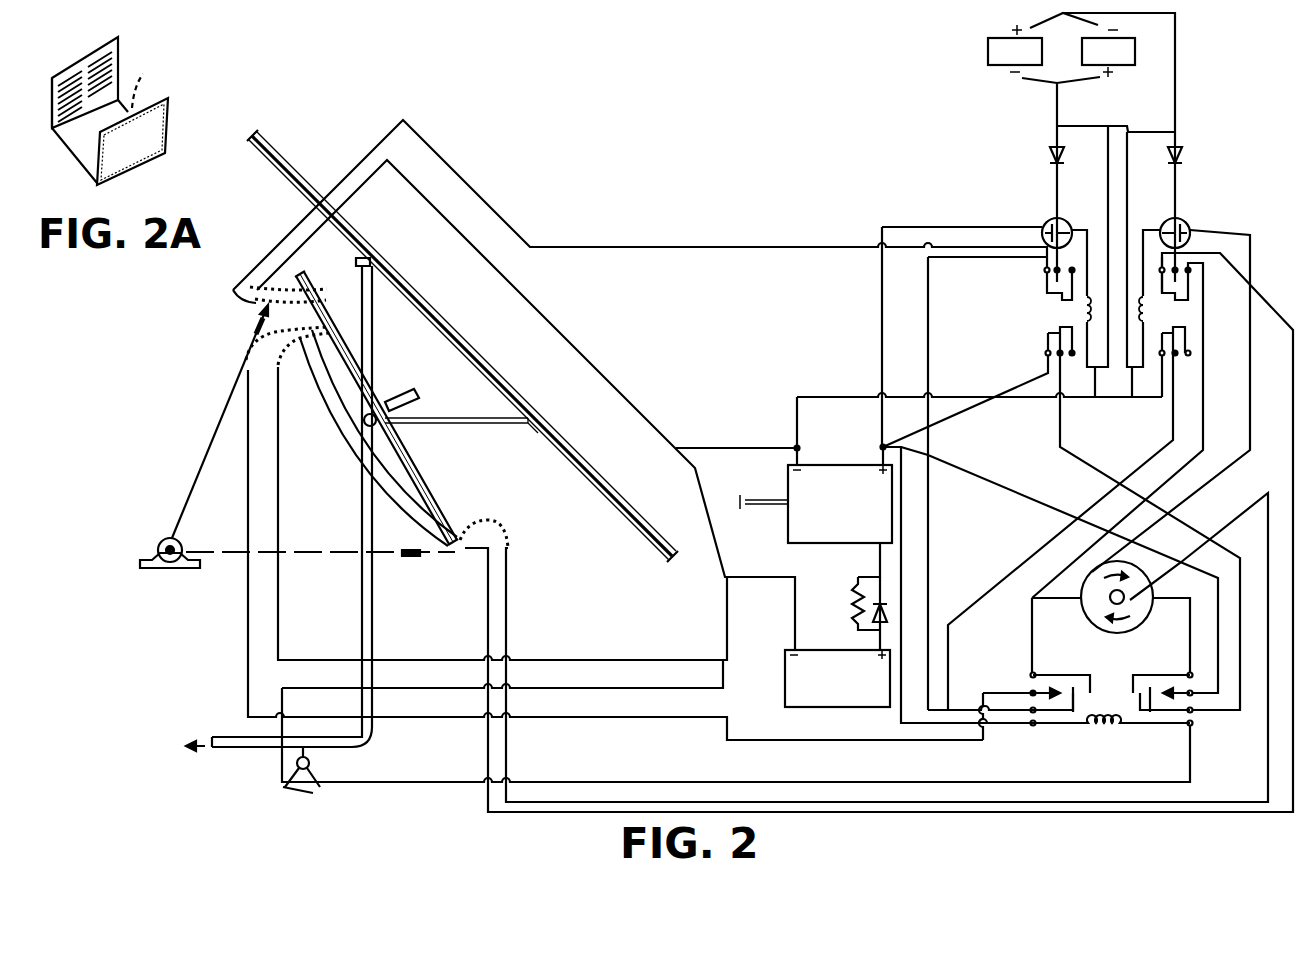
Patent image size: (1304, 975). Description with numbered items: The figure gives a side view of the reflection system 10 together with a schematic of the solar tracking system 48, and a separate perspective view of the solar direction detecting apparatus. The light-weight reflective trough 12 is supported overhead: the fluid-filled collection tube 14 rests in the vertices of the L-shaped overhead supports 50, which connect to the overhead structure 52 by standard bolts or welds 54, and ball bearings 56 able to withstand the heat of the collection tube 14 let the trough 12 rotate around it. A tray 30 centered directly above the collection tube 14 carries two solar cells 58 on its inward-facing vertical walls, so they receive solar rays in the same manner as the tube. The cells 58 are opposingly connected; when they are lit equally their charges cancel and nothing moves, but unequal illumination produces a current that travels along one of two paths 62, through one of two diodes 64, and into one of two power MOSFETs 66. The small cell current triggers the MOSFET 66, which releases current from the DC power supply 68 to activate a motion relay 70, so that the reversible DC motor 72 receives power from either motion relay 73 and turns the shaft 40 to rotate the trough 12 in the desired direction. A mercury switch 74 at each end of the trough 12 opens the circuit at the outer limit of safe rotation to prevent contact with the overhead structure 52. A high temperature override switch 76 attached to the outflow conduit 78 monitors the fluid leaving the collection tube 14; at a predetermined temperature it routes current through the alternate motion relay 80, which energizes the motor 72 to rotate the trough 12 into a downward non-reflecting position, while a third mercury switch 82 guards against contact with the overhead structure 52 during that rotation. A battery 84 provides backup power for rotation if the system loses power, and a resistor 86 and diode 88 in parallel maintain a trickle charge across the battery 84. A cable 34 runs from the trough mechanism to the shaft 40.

In FIG. 2, the reflection system 10 is at (223, 340).
In FIG. 2, the reflective trough 12 is at (378, 498).
In FIG. 2, the collection tube 14 is at (365, 425).
In FIG. 2A, the tray 30 is at (143, 152).
In FIG. 2, the cable 34 is at (188, 505).
In FIG. 2, the shaft 40 is at (176, 568).
In FIG. 2, the tracking system 48 is at (1200, 181).
In FIG. 2, the L-shaped overhead supports 50 is at (366, 324).
In FIG. 2, the overhead structure 52 is at (364, 238).
In FIG. 2, the bolts or welds 54 is at (356, 262).
In FIG. 2, the ball bearings 56 is at (362, 418).
In FIG. 2A, the solar cells 58 is at (142, 70).
In FIG. 2, the solar cells 58 is at (1000, 68).
In FIG. 2, the paths 62 is at (1057, 188).
In FIG. 2, the diodes 64 is at (1182, 156).
In FIG. 2, the PWR MOSFET 66 is at (1189, 222).
In FIG. 2, the DC power supply 68 is at (979, 560).
In FIG. 2, the motion relay 70 is at (1066, 315).
In FIG. 2, the reversible DC motor 72 is at (1088, 622).
In FIG. 2, the motion relay 73 is at (1128, 712).
In FIG. 2, the mercury switch 74 is at (322, 294).
In FIG. 2, the high temperature override switch 76 is at (311, 764).
In FIG. 2, the outflow conduit 78 is at (374, 612).
In FIG. 2, the alternate motion relay 80 is at (1111, 739).
In FIG. 2, the third mercury switch 82 is at (350, 352).
In FIG. 2, the battery 84 is at (837, 678).
In FIG. 2, the resistor 86 is at (852, 608).
In FIG. 2, the diode 88 is at (886, 614).